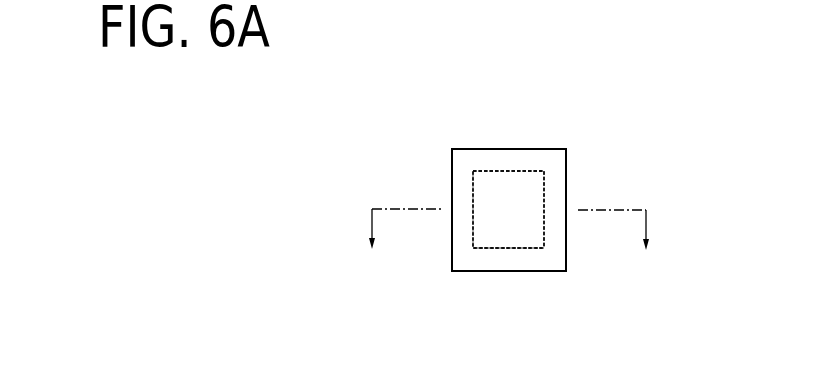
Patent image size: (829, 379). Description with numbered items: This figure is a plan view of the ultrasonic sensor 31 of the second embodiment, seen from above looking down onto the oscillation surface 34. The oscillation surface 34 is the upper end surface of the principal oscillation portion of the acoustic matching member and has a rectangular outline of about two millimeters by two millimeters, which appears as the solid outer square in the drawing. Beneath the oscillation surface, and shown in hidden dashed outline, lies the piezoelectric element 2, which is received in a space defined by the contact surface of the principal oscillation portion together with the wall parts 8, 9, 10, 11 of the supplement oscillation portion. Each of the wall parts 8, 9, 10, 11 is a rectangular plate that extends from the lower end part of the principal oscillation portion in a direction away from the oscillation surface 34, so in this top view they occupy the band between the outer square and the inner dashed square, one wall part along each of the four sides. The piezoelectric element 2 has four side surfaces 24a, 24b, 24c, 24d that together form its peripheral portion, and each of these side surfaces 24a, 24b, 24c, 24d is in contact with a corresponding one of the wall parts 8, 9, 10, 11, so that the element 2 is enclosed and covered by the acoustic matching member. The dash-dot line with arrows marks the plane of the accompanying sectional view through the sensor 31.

The ultrasonic sensor 31 is at (597, 115).
The oscillation surface 34 is at (558, 157).
The wall part 8 is at (463, 192).
The wall part 9 is at (554, 195).
The wall part 11 is at (523, 162).
The wall part 10 is at (512, 258).
The piezoelectric element 2 is at (493, 228).
The side surface 24a is at (473, 227).
The side surface 24b is at (544, 225).
The side surface 24c is at (528, 248).
The side surface 24d is at (497, 171).